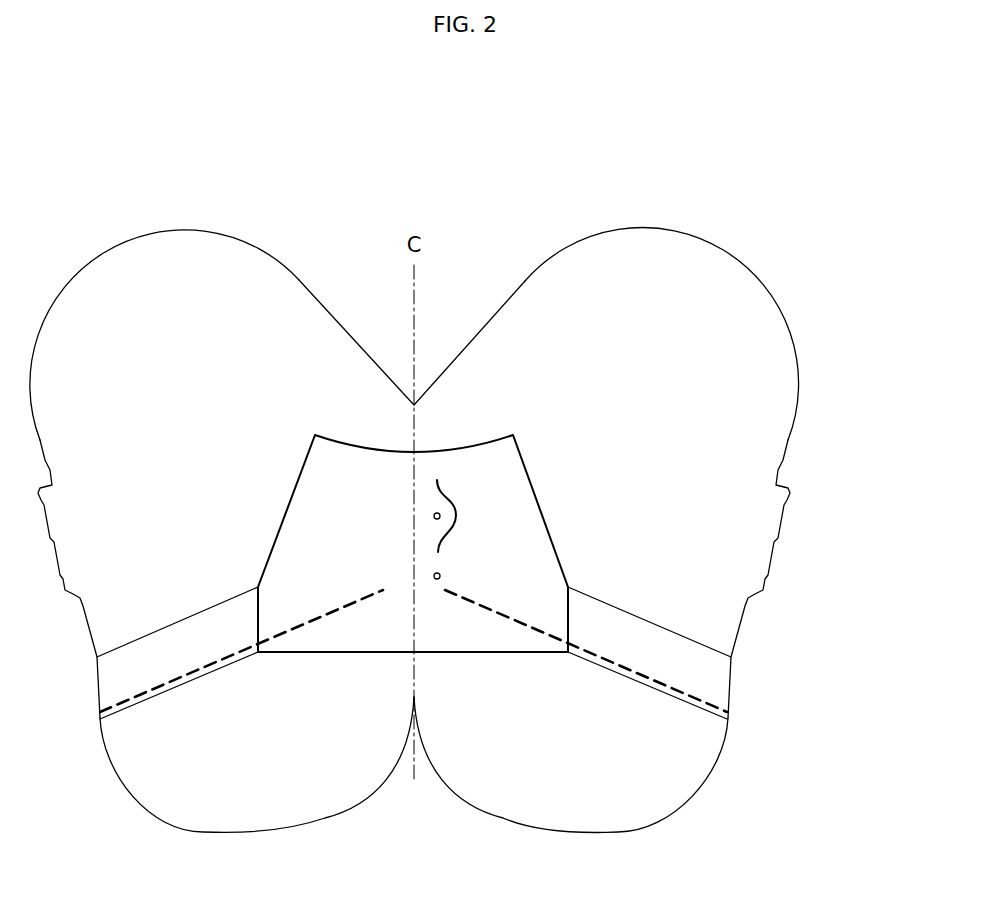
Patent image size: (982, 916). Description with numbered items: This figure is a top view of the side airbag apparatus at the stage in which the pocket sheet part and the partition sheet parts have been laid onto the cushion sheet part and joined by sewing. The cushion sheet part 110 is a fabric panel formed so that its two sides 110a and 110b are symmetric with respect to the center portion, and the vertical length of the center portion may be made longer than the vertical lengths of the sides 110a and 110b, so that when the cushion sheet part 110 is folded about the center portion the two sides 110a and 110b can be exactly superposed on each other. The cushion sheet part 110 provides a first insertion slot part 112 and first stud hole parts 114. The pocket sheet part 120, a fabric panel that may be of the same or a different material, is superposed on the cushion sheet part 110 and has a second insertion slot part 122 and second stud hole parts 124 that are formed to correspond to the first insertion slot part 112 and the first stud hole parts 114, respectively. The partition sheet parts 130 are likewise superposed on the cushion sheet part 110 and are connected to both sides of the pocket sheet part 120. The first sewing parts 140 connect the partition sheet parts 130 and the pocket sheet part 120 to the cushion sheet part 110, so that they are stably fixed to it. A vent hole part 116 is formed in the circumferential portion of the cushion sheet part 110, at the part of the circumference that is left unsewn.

The cushion sheet part 110 is at (286, 252).
The side of the cushion sheet part 110a is at (155, 267).
The side of the cushion sheet part 110b is at (663, 267).
The first insertion slot part 112 is at (664, 505).
The second insertion slot part 122 is at (448, 498).
The first stud hole parts 114 is at (653, 575).
The second stud hole parts 124 is at (440, 516).
The vent hole part 116 is at (772, 552).
The pocket sheet part 120 is at (468, 654).
The partition sheet parts 130 is at (213, 674).
The first sewing parts 140 is at (520, 623).